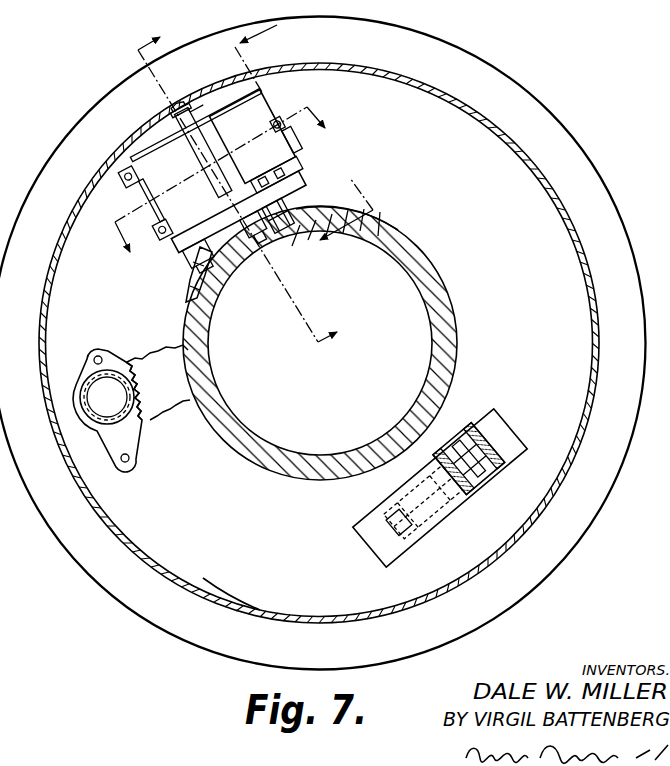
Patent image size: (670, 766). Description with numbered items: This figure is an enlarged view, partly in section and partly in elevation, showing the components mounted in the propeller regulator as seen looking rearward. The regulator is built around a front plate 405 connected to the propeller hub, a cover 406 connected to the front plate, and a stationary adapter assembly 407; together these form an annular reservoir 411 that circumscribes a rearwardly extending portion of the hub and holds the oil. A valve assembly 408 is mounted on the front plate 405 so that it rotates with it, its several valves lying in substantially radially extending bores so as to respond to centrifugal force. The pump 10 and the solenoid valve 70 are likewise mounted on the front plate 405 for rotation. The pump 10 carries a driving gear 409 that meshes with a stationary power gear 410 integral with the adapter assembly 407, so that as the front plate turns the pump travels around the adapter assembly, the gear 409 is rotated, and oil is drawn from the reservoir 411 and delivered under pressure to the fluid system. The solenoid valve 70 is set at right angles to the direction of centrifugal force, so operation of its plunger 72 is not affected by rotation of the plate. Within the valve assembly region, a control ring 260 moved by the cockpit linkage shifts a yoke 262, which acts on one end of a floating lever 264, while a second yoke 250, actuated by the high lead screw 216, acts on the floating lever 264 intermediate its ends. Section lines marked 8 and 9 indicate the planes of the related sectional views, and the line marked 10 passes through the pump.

The front plate 405 is at (507, 75).
The cover 406 is at (148, 560).
The annular reservoir 411 is at (203, 578).
The stationary adapter assembly 407 is at (206, 364).
The valve assembly 408 is at (268, 110).
The floating lever 264 is at (200, 265).
The control ring 260 is at (250, 238).
The high lead screw 216 is at (270, 243).
The yoke 262 is at (208, 290).
The second yoke 250 is at (280, 228).
The section line 8- 8 is at (223, 182).
The section line 9- 9 is at (289, 145).
The pump 10 is at (105, 352).
The driving gear 409 is at (128, 366).
The stationary power gear 410 is at (177, 407).
The solenoid valve 70 is at (450, 513).
The solenoid valve plunger 72 is at (444, 440).